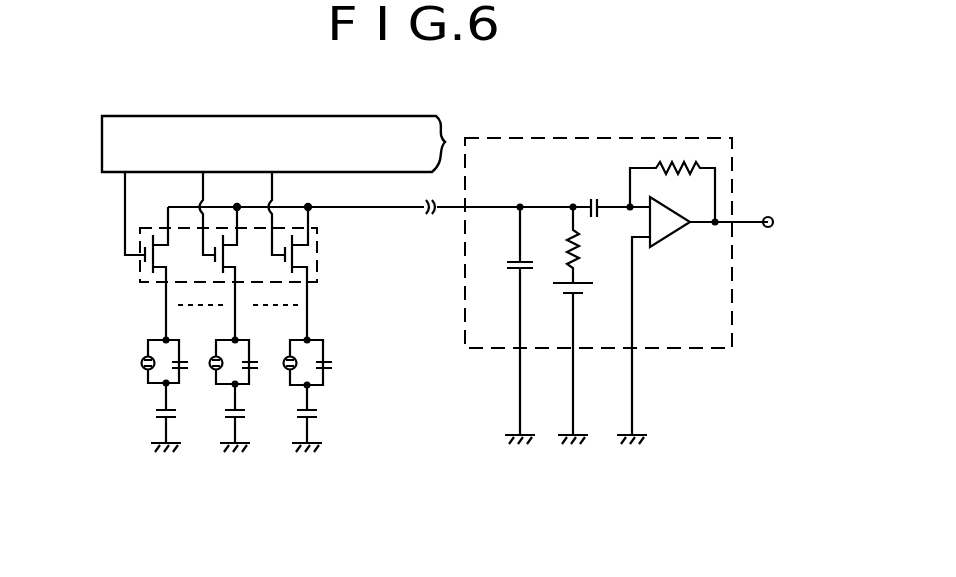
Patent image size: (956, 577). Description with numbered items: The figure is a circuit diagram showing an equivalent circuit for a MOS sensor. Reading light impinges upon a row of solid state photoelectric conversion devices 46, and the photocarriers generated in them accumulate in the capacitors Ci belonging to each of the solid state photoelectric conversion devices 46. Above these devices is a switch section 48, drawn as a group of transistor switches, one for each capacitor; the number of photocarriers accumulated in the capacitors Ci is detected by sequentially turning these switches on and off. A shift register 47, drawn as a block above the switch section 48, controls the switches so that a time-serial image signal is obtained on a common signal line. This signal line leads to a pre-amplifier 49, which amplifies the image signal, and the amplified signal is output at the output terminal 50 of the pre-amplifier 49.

The solid state photoelectric conversion device 46 is at (142, 390).
The shift register 47 is at (112, 172).
The switch section 48 is at (140, 272).
The pre-amplifier 49 is at (673, 348).
The output terminal 50 is at (773, 221).